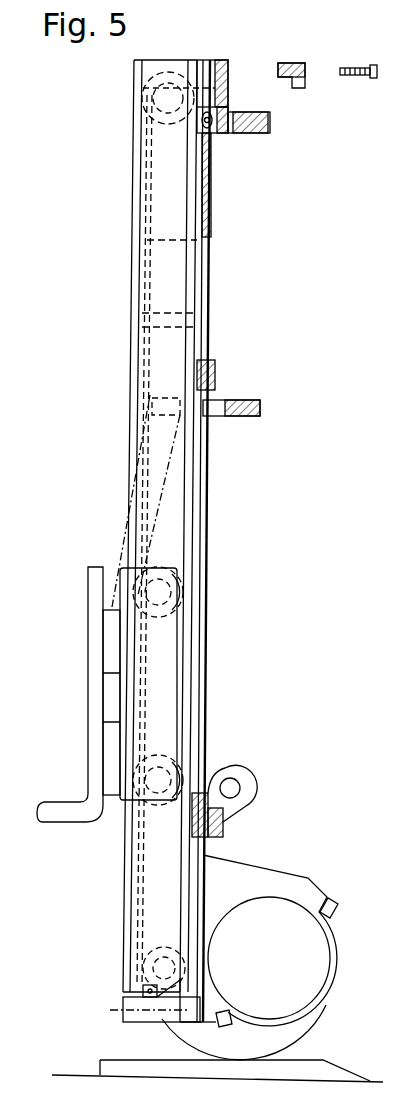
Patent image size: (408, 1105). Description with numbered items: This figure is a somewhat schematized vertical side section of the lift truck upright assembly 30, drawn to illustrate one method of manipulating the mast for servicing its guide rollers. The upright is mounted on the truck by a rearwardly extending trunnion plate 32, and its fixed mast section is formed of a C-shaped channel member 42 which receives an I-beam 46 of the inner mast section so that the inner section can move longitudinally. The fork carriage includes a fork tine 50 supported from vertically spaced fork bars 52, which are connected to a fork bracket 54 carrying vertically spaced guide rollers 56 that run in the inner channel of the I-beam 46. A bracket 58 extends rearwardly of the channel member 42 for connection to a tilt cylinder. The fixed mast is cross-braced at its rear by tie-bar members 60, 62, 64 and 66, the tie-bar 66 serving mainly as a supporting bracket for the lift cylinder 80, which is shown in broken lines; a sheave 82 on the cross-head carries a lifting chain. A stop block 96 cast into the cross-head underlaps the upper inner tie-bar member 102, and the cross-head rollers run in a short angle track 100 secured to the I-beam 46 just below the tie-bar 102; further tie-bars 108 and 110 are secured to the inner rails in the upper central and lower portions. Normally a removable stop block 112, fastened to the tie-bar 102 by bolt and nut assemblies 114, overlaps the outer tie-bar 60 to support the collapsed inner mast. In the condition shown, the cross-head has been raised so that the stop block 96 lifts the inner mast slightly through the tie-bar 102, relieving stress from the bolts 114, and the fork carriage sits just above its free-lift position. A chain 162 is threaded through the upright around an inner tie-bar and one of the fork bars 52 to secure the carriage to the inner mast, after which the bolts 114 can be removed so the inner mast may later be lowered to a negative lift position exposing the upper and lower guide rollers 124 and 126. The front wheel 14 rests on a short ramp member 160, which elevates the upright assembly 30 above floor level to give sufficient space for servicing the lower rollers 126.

The front wheel 14 is at (283, 1041).
The upright assembly 30 is at (214, 531).
The trunnion plate 32 is at (274, 882).
The channel member 42 is at (200, 452).
The I-beam 46 is at (131, 442).
The fork tine 50 is at (93, 656).
The fork bar 52 is at (112, 632).
The fork bracket 54 is at (120, 695).
The guide roller 56 is at (180, 597).
The bracket 58 is at (243, 779).
The tie-bar member 60 is at (270, 126).
The tie-bar member 62 is at (262, 400).
The tie-bar member 64 is at (224, 831).
The tie-bar 66 is at (123, 1010).
The cylinder 80 is at (172, 292).
The sheave 82 is at (172, 93).
The stop block 96 is at (213, 132).
The angle track 100 is at (208, 210).
The tie-bar member 102 is at (228, 88).
The tie-bar 108 is at (215, 372).
The tie-bar 110 is at (203, 792).
The stop block 112 is at (292, 63).
The bolt and nut assembly 114 is at (352, 68).
The guide roller 124 is at (152, 128).
The guide roller 126 is at (143, 971).
The ramp member 160 is at (103, 1068).
The chain 162 is at (122, 548).